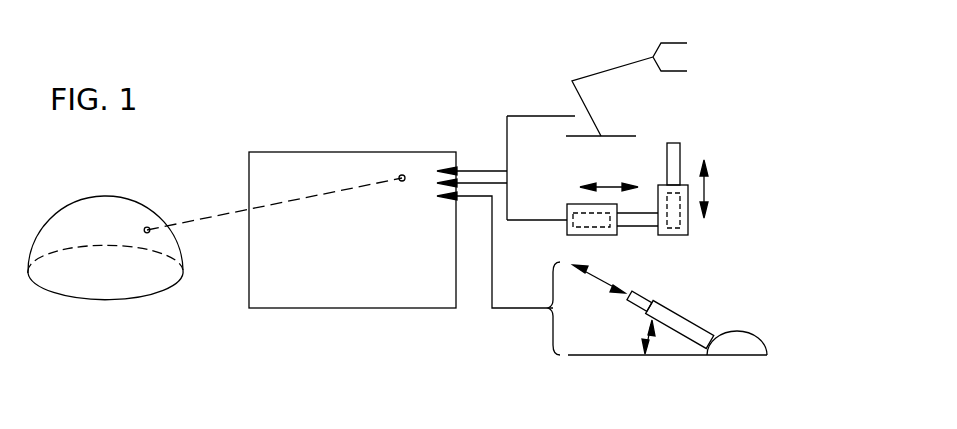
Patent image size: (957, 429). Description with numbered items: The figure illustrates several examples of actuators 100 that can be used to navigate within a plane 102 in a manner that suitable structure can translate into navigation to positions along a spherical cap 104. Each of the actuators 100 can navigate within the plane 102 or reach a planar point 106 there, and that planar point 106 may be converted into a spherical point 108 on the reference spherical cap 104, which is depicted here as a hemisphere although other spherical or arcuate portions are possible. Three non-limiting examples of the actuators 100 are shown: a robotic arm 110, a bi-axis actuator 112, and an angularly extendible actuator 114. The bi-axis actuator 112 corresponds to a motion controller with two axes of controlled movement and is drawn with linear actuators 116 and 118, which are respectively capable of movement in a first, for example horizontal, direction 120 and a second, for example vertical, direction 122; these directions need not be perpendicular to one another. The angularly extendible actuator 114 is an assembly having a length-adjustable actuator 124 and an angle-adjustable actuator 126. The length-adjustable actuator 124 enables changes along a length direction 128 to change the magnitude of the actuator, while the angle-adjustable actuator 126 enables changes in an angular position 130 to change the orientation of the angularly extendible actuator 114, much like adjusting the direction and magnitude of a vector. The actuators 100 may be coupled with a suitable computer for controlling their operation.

The actuators 100 is at (456, 82).
The plane 102 is at (363, 309).
The spherical cap 104 is at (107, 301).
The planar point 106 is at (400, 176).
The spherical point 108 is at (147, 227).
The robotic arm 110 is at (702, 46).
The bi-axis actuator 112 is at (725, 153).
The angularly extendible actuator 114 is at (694, 284).
The linear actuator 116 is at (577, 204).
The linear actuator 118 is at (693, 228).
The first direction 120 is at (608, 186).
The second direction 122 is at (707, 190).
The length-adjustable actuator 124 is at (697, 320).
The angle-adjustable actuator 126 is at (733, 348).
The length direction 128 is at (607, 275).
The angular position 130 is at (642, 337).